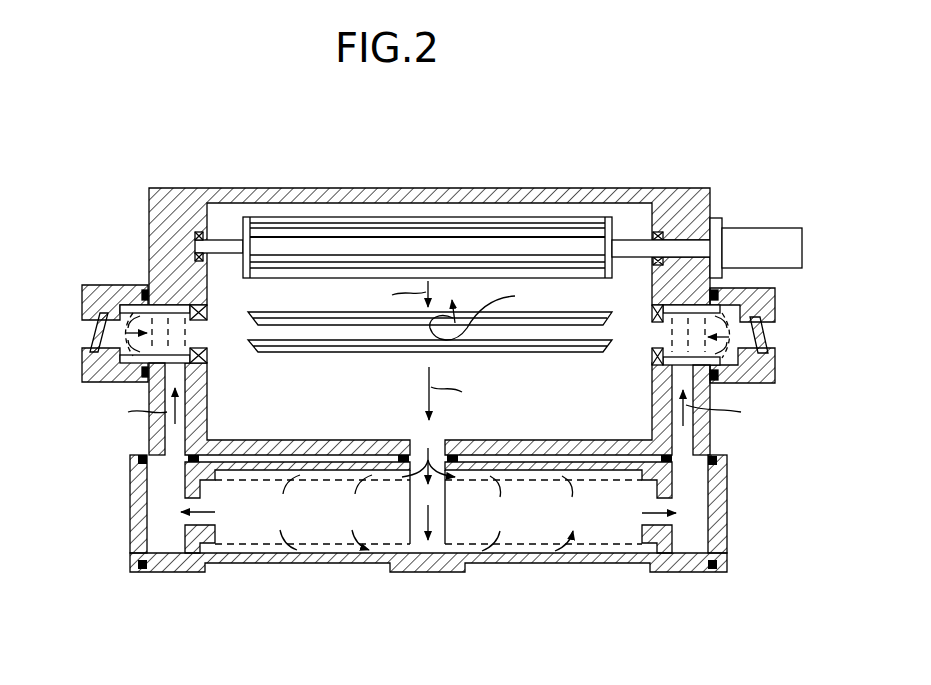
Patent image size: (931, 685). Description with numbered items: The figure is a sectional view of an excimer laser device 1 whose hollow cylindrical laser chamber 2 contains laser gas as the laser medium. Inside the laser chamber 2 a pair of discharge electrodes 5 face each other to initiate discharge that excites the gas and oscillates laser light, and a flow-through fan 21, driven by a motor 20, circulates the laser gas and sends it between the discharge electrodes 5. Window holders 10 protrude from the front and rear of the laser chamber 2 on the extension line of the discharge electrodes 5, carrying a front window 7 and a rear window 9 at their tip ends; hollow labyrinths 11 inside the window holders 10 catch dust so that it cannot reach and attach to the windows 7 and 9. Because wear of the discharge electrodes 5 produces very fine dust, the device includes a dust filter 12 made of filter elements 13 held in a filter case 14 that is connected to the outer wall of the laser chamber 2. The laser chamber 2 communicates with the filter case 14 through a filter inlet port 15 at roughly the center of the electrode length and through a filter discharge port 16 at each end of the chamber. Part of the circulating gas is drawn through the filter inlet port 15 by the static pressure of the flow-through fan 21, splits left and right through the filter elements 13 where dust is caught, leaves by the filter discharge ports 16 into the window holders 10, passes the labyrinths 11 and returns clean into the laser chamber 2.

The excimer laser device 1 is at (727, 162).
The laser chamber 2 is at (222, 189).
The discharge electrodes 5 is at (305, 311).
The front window 7 is at (97, 330).
The rear window 9 is at (771, 333).
The window holders 10 is at (92, 284).
The labyrinths 11 is at (108, 369).
The dust filter 12 is at (193, 592).
The filter elements 13 is at (243, 546).
The filter case 14 is at (323, 568).
The filter inlet port 15 is at (418, 440).
The filter discharge port 16 is at (148, 453).
The motor 20 is at (766, 227).
The flow-through fan 21 is at (335, 216).